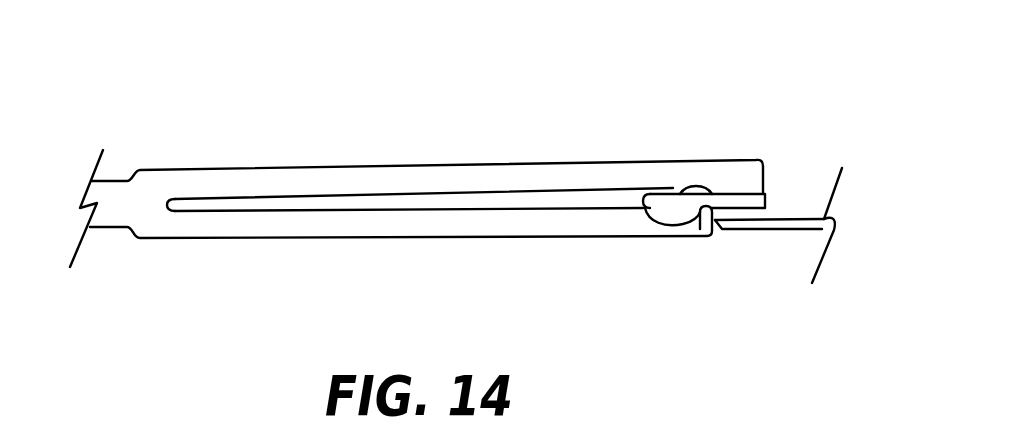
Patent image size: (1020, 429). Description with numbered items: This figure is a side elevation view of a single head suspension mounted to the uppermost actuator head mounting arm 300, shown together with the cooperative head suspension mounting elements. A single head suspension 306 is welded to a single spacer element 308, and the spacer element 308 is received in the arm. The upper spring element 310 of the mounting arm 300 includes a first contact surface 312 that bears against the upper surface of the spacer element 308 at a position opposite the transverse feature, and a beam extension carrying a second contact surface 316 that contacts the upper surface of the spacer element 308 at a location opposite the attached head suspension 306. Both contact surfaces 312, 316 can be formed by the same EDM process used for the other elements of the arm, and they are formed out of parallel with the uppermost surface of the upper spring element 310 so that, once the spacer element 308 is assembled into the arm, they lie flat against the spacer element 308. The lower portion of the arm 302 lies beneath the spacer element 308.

The uppermost actuator head mounting arm 300 is at (277, 100).
The lower arm 302 is at (433, 223).
The head suspension 306 is at (780, 225).
The spacer element 308 is at (660, 218).
The upper spring element 310 is at (413, 168).
The first contact surface 312 is at (673, 188).
The second contact surface 316 is at (743, 193).